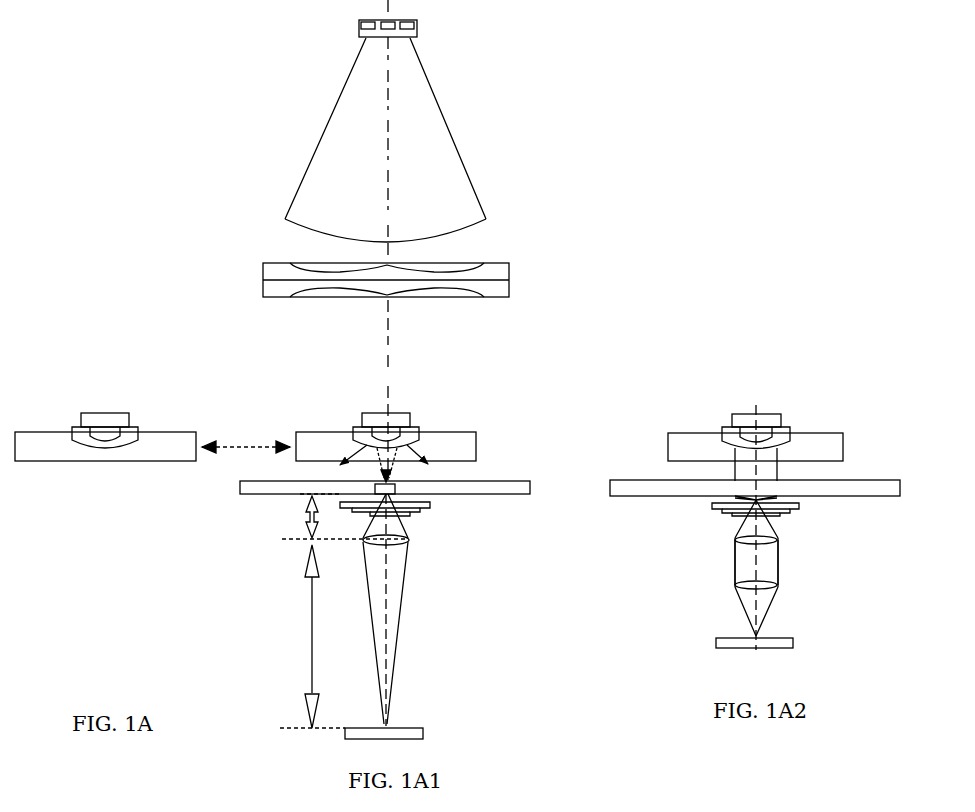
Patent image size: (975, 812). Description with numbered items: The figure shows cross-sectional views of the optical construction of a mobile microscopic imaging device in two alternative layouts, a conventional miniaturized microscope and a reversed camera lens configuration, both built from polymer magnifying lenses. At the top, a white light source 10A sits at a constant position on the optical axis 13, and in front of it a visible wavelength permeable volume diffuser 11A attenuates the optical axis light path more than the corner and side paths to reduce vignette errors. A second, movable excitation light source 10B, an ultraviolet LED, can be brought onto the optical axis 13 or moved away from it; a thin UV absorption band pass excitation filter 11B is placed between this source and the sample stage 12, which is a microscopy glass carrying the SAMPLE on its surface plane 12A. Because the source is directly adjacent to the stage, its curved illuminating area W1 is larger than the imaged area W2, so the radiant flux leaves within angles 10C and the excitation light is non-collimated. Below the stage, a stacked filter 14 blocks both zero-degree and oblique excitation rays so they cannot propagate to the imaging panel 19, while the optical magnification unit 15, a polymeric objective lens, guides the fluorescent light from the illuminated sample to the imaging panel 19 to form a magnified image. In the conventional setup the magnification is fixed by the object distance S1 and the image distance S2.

In FIG. 1A, the white light source 10A is at (358, 33).
In FIG. 1A, the excitation light source 10B is at (106, 412).
In FIG. 1A, the angles of the excitation light 10C is at (432, 468).
In FIG. 1A, the volume diffuser 11A is at (270, 276).
In FIG. 1A, the excitation filter 11B is at (178, 450).
In FIG. 1A, the optical axis 13 is at (388, 375).
In FIG. 1A, the sample stage 12 is at (503, 487).
In FIG. 1A1, the surface plane 12A is at (473, 490).
In FIG. 1A2, the surface plane 12A is at (690, 499).
In FIG. 1A1, the stacked filter 14 is at (432, 515).
In FIG. 1A2, the stacked filter 14 is at (717, 518).
In FIG. 1A1, the optical magnification unit 15 is at (405, 545).
In FIG. 1A2, the optical magnification unit 15 is at (730, 543).
In FIG. 1A1, the imaging panel 19 is at (424, 731).
In FIG. 1A2, the imaging panel 19 is at (727, 633).
In FIG. 1A, the illuminating area W1 is at (96, 447).
In FIG. 1A, the imaged area W2 is at (337, 467).
In FIG. 1A1, the object distance S1 is at (304, 517).
In FIG. 1A1, the image distance S2 is at (312, 636).
In FIG. 1A, the sample SAMPLE is at (376, 484).